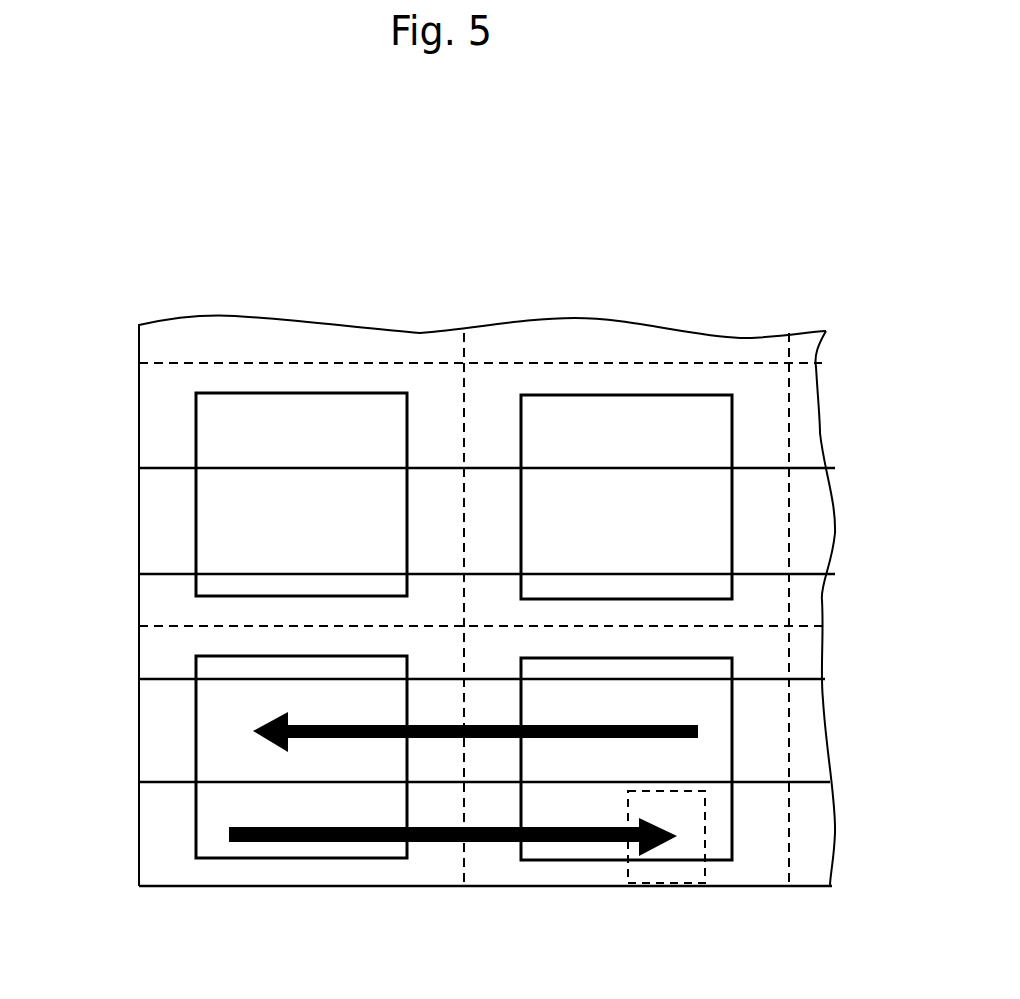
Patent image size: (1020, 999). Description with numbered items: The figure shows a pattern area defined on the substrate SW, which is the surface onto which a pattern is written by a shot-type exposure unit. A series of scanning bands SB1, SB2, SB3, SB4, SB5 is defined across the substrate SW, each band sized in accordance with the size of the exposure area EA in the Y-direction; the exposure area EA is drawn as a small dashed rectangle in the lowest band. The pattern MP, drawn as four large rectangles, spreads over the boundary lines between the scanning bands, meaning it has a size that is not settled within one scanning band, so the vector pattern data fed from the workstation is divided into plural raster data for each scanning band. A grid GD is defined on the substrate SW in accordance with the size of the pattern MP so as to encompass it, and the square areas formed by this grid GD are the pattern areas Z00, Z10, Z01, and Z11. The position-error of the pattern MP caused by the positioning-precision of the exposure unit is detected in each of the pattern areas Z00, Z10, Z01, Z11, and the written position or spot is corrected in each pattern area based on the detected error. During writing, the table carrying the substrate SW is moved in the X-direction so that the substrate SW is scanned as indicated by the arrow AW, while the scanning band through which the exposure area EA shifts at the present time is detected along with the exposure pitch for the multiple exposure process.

The substrate SW is at (152, 265).
The pattern MP is at (307, 379).
The pattern area Z01 is at (440, 394).
The pattern area Z11 is at (500, 395).
The pattern area Z00 is at (345, 879).
The pattern area Z10 is at (500, 882).
The grid GD is at (725, 360).
The scanning band SB1 is at (128, 782).
The scanning band SB2 is at (128, 679).
The scanning band SB3 is at (128, 574).
The scanning band SB4 is at (128, 468).
The scanning band SB5 is at (128, 363).
The arrow AW is at (673, 725).
The exposure area EA is at (660, 888).